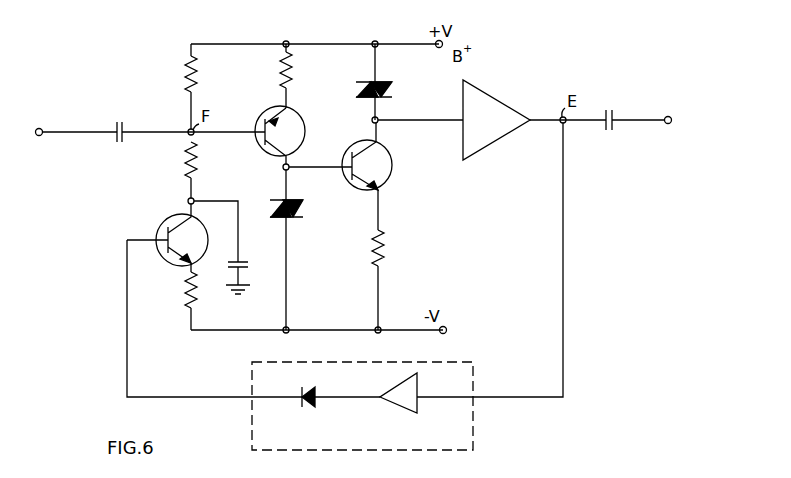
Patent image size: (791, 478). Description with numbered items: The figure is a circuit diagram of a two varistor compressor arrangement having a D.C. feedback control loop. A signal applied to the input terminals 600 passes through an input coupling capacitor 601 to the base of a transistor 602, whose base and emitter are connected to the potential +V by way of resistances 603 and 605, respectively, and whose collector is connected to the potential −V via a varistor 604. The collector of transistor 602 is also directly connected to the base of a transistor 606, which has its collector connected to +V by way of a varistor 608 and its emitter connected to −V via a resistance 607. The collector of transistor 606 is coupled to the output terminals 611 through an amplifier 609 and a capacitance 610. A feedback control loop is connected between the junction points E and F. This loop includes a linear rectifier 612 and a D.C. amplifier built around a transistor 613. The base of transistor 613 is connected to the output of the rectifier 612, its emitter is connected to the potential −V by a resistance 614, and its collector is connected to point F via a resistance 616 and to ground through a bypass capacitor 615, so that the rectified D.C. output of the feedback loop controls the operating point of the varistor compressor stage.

The input terminals 600 is at (38, 130).
The input coupling capacitor 601 is at (128, 111).
The transistor 602 is at (303, 136).
The resistance 603 is at (196, 75).
The varistor 604 is at (292, 217).
The resistance 605 is at (291, 74).
The transistor 606 is at (391, 176).
The resistance 607 is at (387, 257).
The varistor 608 is at (388, 94).
The amplifier 609 is at (516, 94).
The capacitance 610 is at (622, 104).
The output terminals 611 is at (670, 116).
The linear rectifier 612 is at (470, 362).
The transistor 613 is at (160, 228).
The resistance 614 is at (185, 292).
The bypass capacitor 615 is at (248, 265).
The resistance 616 is at (186, 173).